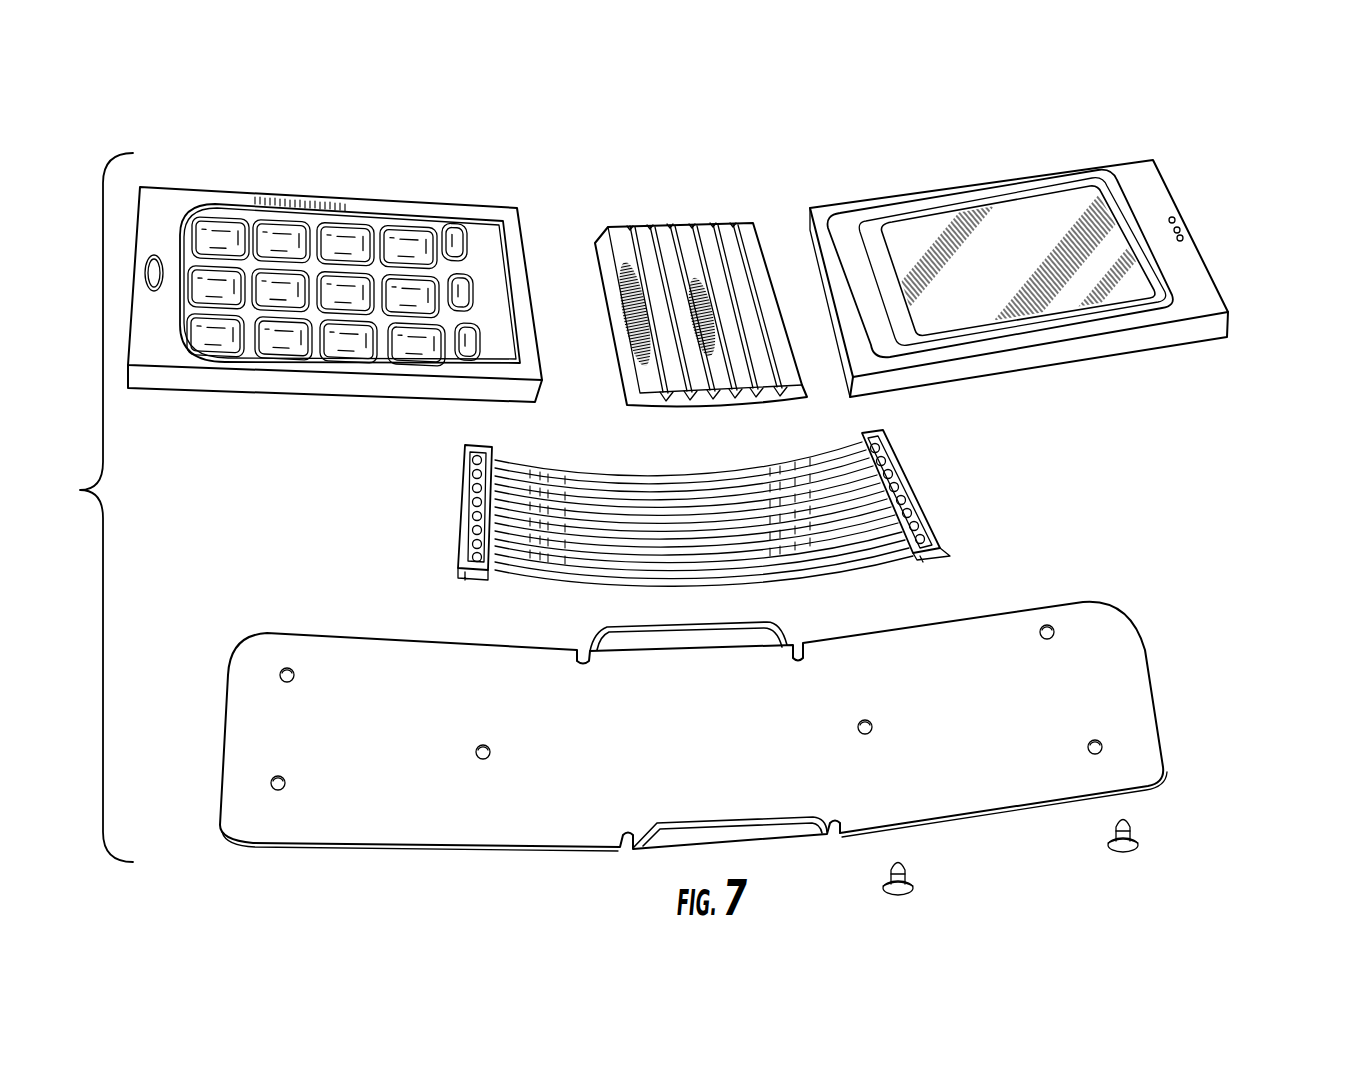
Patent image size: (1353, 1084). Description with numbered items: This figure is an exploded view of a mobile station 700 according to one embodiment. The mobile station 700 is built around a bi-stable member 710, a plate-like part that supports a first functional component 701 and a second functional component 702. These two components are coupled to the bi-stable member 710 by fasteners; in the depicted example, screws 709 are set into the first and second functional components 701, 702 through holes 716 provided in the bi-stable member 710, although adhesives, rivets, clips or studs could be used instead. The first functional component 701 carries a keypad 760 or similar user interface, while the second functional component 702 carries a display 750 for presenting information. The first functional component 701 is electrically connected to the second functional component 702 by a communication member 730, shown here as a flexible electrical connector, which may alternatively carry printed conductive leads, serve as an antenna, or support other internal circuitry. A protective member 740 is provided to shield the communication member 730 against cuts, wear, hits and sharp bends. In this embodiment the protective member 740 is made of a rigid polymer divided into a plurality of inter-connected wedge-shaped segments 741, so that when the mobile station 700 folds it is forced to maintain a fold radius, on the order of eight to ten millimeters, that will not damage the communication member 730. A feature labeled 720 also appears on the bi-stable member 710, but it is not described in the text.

The mobile station 700 is at (826, 152).
The first functional component 701 is at (172, 200).
The keypad 760 is at (345, 238).
The protective member 740 is at (682, 240).
The wedge-shaped segments 741 is at (747, 217).
The second functional component 702 is at (1187, 277).
The display 750 is at (1043, 222).
The communication member 730 is at (858, 503).
The bi-stable member 710 is at (1078, 660).
The holes 716 is at (1103, 742).
The tab 720 is at (763, 838).
The screws 709 is at (1135, 825).